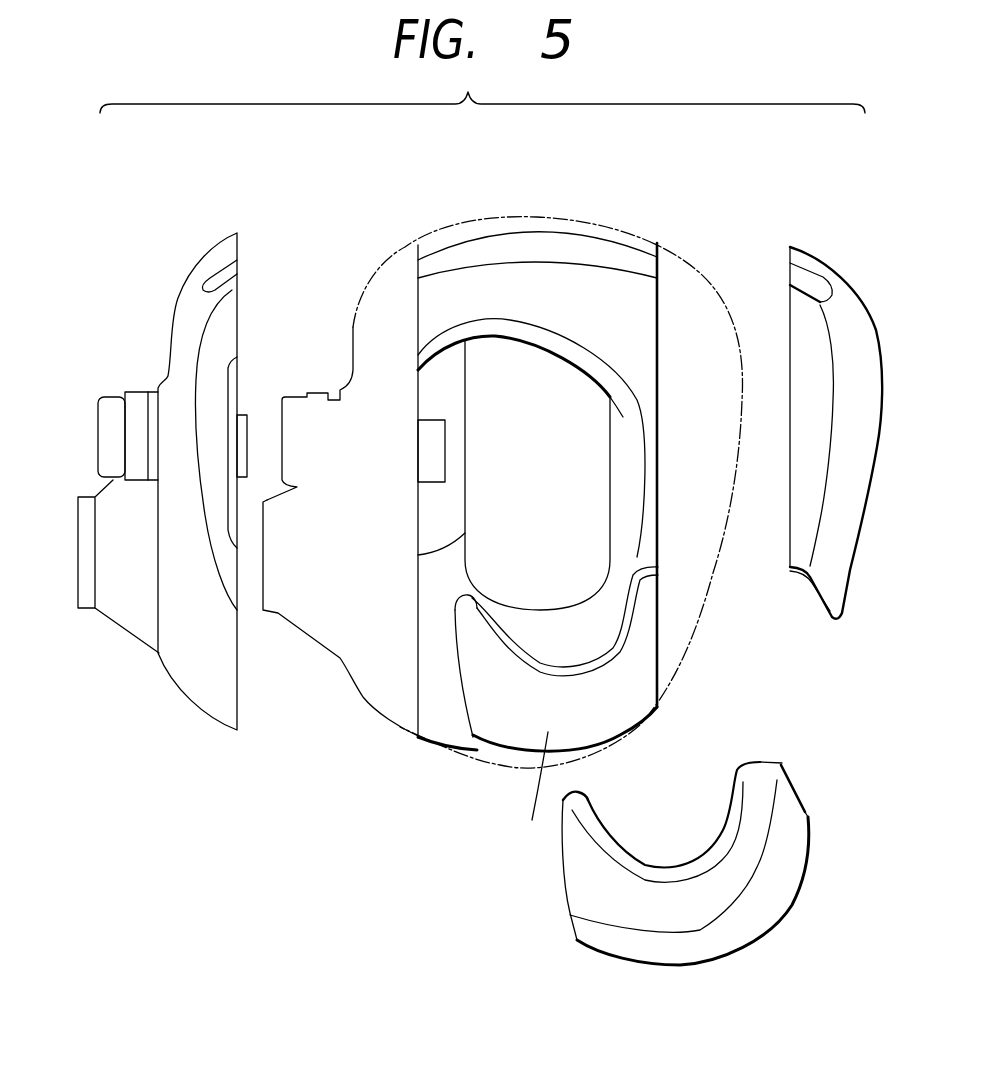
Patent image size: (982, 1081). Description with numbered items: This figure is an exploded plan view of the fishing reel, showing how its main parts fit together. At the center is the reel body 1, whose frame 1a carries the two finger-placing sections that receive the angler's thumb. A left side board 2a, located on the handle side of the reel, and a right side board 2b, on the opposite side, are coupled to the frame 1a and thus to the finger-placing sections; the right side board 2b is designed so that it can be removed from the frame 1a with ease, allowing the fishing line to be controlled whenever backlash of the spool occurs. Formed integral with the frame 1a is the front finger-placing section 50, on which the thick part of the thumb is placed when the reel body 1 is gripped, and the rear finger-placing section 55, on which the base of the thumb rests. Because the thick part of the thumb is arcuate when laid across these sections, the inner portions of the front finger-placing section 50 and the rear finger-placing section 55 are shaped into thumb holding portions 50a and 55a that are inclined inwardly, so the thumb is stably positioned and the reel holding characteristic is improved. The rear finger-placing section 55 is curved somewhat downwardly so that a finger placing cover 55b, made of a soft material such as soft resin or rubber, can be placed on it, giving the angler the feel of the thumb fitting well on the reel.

The reel body 1 is at (866, 581).
The frame 1a is at (440, 722).
The left side board 2a is at (213, 697).
The right side board 2b is at (848, 300).
The front finger-placing section 50 is at (627, 283).
The thumb holding portion 50a is at (477, 323).
The rear finger-placing section 55 is at (531, 801).
The thumb holding portion 55a is at (518, 632).
The finger placing cover 55b is at (770, 880).